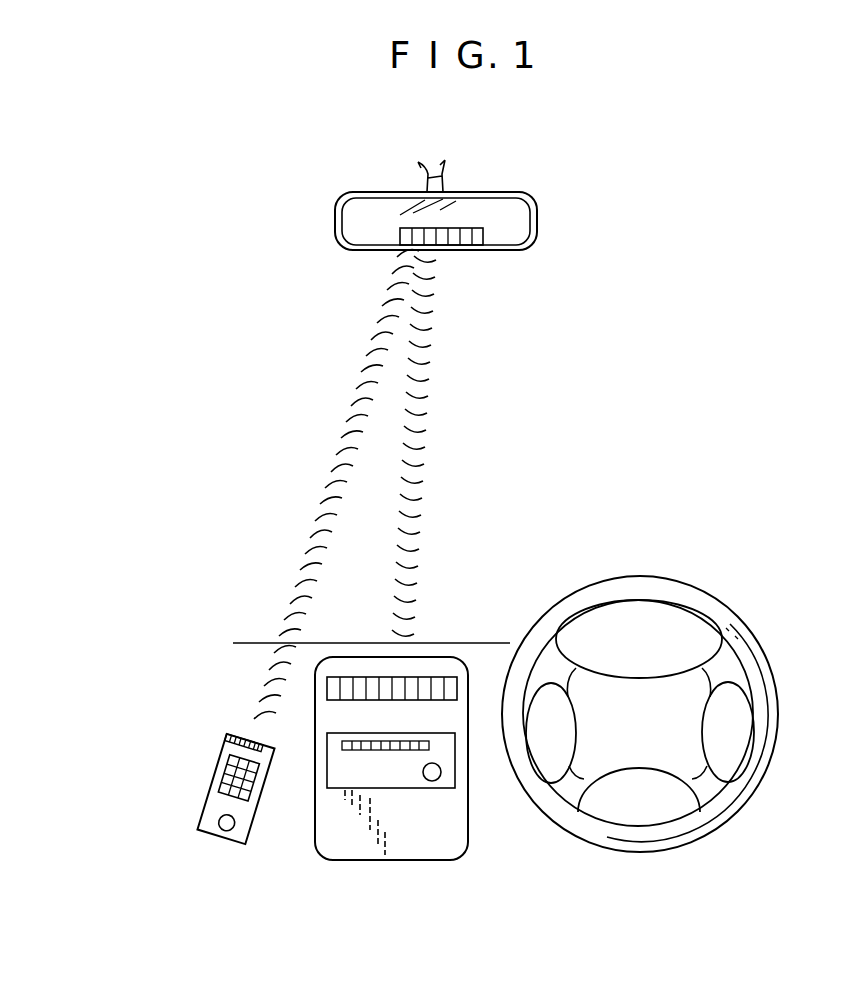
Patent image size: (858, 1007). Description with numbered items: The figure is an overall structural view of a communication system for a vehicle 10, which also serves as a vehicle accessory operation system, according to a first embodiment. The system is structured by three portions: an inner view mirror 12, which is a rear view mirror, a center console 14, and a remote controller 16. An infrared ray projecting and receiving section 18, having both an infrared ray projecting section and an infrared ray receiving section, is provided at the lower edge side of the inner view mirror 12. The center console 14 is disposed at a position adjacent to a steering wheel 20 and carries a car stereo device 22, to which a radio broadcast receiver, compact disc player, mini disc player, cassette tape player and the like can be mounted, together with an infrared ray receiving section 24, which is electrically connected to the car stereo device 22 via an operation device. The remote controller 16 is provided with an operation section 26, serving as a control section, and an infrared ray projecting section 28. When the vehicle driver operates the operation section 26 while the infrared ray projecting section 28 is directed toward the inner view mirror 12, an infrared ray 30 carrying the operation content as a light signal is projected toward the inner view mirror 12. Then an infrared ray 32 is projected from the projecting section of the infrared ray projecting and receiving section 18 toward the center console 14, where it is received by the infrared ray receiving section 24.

The communication system for a vehicle 10 is at (593, 432).
The inner view mirror 12 is at (539, 215).
The center console 14 is at (468, 818).
The remote controller 16 is at (258, 812).
The infrared ray projecting and receiving section 18 is at (482, 236).
The steering wheel 20 is at (717, 627).
The car stereo device 22 is at (409, 788).
The infrared ray receiving section 24 is at (437, 690).
The operation section 26 is at (228, 768).
The infrared ray projecting section 28 is at (243, 733).
The infrared ray 30 is at (320, 516).
The infrared ray 32 is at (417, 501).